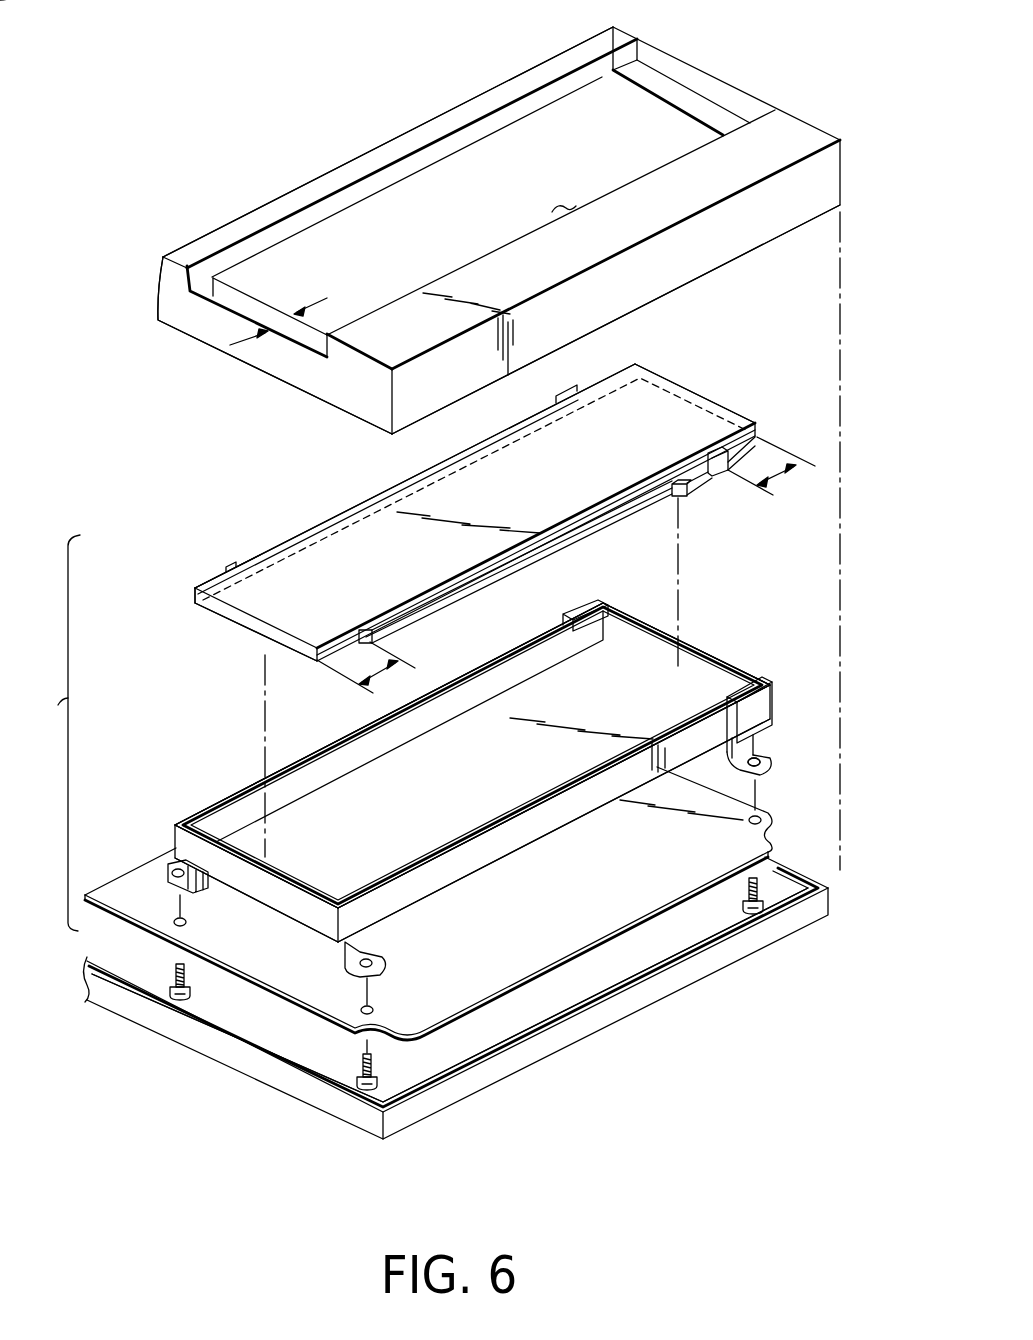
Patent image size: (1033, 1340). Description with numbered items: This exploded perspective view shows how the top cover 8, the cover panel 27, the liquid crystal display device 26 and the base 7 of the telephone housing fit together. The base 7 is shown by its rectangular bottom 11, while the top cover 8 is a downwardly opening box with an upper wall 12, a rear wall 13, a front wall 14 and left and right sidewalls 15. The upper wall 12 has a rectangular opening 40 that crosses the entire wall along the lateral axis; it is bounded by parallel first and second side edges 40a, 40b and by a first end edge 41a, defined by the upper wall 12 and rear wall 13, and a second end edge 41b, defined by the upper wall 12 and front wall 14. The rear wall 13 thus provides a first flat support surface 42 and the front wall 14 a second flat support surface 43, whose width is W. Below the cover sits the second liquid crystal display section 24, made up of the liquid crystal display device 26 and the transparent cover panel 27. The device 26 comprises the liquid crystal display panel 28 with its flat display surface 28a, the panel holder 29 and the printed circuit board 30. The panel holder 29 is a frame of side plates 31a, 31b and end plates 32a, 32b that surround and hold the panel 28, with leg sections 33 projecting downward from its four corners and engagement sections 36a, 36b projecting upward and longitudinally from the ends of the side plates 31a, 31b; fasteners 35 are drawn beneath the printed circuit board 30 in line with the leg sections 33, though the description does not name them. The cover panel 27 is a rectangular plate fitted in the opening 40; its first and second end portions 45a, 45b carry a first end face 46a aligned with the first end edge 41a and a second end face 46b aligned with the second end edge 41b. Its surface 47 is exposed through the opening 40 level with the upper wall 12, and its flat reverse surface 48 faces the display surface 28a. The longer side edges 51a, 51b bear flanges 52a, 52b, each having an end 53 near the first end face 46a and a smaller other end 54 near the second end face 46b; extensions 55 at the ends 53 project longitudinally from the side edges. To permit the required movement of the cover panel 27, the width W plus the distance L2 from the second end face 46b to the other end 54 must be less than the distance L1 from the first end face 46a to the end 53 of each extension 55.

The base 7 is at (828, 898).
The top cover 8 is at (810, 123).
The rectangular bottom 11 is at (293, 1053).
The upper wall 12 is at (322, 187).
The rear wall 13 is at (632, 108).
The front wall 14 is at (270, 362).
The sidewalls 15 is at (780, 217).
The second liquid crystal display section 24 is at (391, 647).
The liquid crystal display device 26 is at (750, 663).
The cover panel 27 is at (325, 558).
The liquid crystal display panel 28 is at (593, 750).
The display surface 28a is at (472, 755).
The panel holder 29 is at (480, 880).
The printed circuit board 30 is at (598, 935).
The side plate 31a is at (540, 823).
The side plate 31b is at (353, 760).
The end plate 32a is at (700, 650).
The end plate 32b is at (287, 900).
The leg sections 33 is at (170, 880).
The screw 35 is at (160, 1008).
The engagement section 36a is at (773, 707).
The engagement section 36b is at (587, 603).
The opening 40 is at (468, 283).
The first side edge 40a is at (572, 208).
The second side edge 40b is at (478, 125).
The first end edge 41a is at (630, 58).
The second end edge 41b is at (192, 290).
The first flat support surface 42 is at (725, 118).
The second flat support surface 43 is at (247, 312).
The first end portion 45a is at (687, 408).
The second end portion 45b is at (263, 612).
The first end face 46a is at (670, 393).
The second end face 46b is at (222, 613).
The surface 47 is at (468, 500).
The reverse surface 48 is at (425, 572).
The side edge 51a is at (572, 517).
The side edge 51b is at (277, 538).
The flange 52a is at (517, 557).
The flange 52b is at (377, 490).
The end 53 is at (578, 383).
The other end 54 is at (228, 568).
The extensions 55 is at (548, 397).
The width of the second support surface W is at (283, 316).
The distance between first end face and end of extension L1 is at (771, 472).
The distance between second end face and other end of flange L2 is at (366, 673).